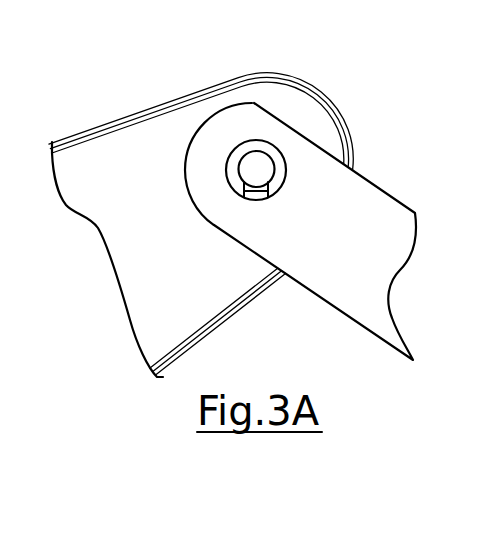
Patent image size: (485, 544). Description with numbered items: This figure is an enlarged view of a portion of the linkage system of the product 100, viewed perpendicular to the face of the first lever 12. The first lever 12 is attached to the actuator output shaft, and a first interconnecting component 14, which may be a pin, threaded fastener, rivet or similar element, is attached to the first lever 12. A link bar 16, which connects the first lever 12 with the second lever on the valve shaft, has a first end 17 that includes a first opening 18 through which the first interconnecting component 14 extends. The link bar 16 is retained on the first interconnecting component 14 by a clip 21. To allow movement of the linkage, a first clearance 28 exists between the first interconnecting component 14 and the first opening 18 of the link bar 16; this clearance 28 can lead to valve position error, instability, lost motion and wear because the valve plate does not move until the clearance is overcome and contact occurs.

The product 100 is at (247, 205).
The first lever 12 is at (215, 78).
The first interconnecting component 14 is at (270, 173).
The link bar 16 is at (397, 196).
The first end 17 is at (190, 131).
The first opening 18 is at (245, 200).
The clip 21 is at (271, 146).
The first clearance 28 is at (260, 199).